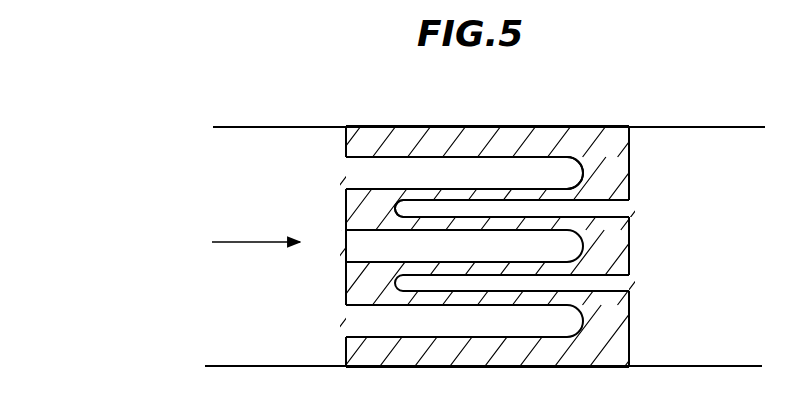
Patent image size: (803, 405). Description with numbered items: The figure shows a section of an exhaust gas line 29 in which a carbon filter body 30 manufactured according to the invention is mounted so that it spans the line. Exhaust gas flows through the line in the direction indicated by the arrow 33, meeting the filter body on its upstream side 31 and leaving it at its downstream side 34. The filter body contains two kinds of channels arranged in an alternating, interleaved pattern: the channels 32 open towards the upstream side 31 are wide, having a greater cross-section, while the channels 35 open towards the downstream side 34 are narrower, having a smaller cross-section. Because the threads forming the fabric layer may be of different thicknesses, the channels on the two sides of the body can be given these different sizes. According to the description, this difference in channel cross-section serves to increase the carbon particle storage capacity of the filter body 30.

The exhaust gas line 29 is at (270, 127).
The carbon filter body 30 is at (597, 152).
The upstream side 31 is at (334, 258).
The channels open towards the upstream side 32 is at (423, 173).
The arrow indicating exhaust gas flow direction 33 is at (258, 242).
The downstream side 34 is at (638, 264).
The channels open towards the downstream side 35 is at (620, 206).